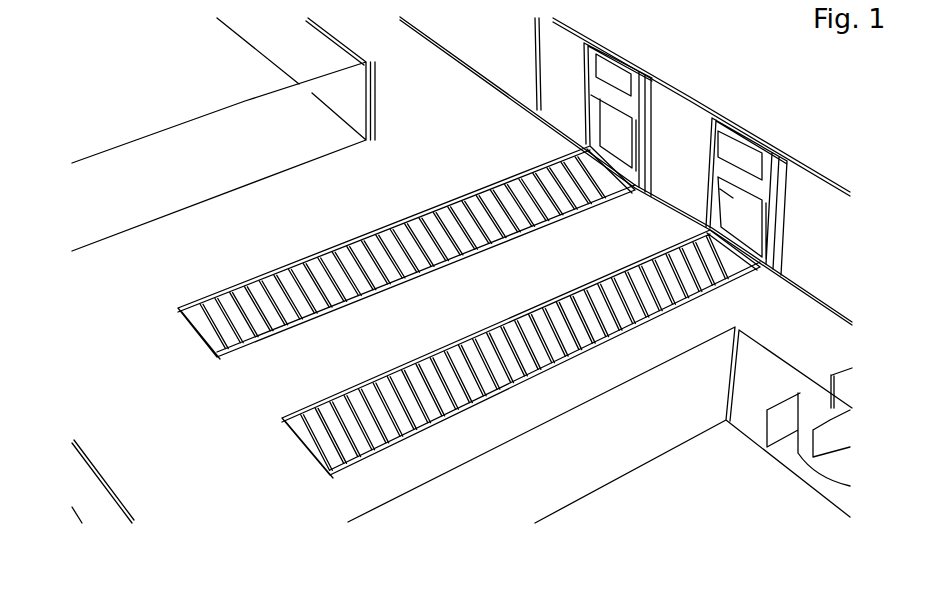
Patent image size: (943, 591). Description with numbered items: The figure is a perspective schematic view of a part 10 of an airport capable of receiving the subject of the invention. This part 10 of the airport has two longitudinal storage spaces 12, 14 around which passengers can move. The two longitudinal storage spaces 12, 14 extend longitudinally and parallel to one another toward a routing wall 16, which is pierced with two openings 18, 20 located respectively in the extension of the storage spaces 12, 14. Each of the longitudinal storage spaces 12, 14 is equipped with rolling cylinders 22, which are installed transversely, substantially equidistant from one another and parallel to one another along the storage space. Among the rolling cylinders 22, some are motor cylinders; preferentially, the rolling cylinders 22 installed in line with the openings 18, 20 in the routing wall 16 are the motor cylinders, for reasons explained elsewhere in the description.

The part of an airport 10 is at (462, 270).
The longitudinal storage space 12 is at (370, 228).
The longitudinal storage space 14 is at (568, 288).
The routing wall 16 is at (626, 171).
The opening 18 is at (586, 110).
The opening 20 is at (710, 192).
The rolling cylinders 22 is at (469, 309).